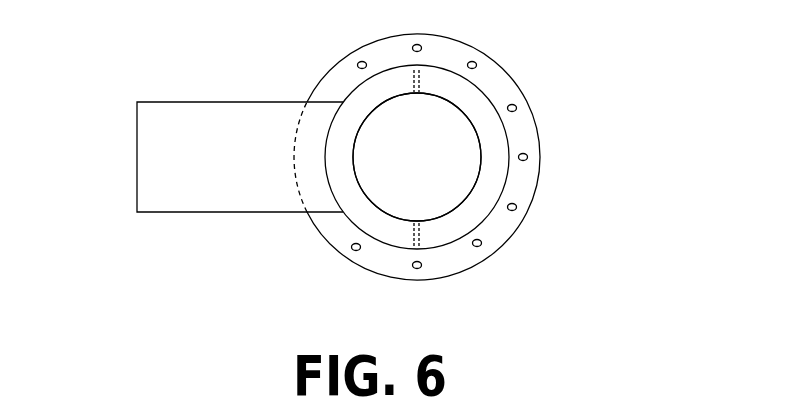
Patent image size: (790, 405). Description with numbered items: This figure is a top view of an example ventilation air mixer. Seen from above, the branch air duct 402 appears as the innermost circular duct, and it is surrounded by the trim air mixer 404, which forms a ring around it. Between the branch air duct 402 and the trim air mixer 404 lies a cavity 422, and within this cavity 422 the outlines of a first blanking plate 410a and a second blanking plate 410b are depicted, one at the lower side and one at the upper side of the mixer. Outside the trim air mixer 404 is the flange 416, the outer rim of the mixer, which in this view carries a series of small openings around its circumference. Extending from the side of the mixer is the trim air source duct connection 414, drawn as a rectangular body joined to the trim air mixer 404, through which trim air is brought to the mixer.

The branch air duct 402 is at (453, 102).
The trim air mixer 404 is at (508, 150).
The first blanking plate 410a is at (420, 233).
The second blanking plate 410b is at (413, 82).
The trim air source duct connection 414 is at (137, 130).
The flange 416 is at (538, 182).
The cavity 422 is at (373, 222).